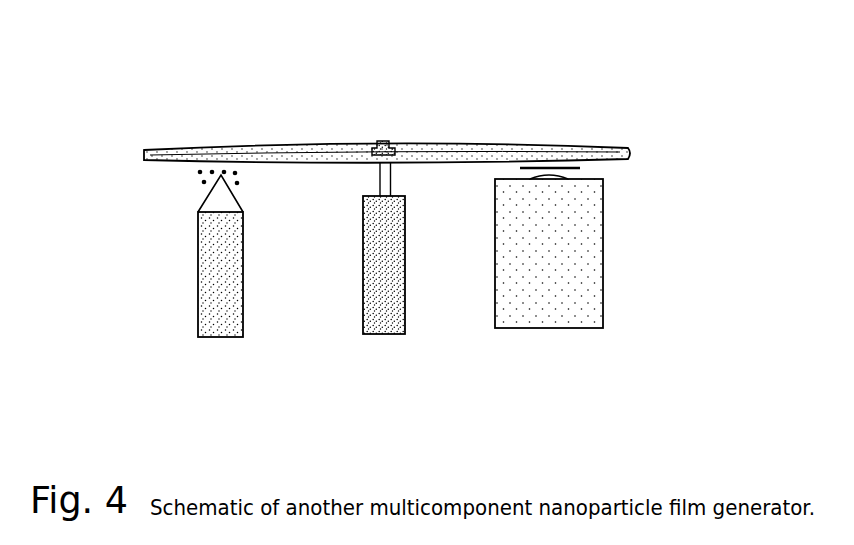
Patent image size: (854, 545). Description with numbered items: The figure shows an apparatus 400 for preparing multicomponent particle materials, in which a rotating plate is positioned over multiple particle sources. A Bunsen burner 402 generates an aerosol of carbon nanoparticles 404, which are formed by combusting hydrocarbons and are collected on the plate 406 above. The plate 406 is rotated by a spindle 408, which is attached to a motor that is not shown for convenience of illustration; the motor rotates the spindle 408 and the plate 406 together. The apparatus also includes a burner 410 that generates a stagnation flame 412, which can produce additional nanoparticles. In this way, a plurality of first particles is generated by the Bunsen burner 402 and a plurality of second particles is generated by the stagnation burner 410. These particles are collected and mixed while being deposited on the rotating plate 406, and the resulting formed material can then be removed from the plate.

The apparatus 400 is at (173, 48).
The Bunsen burner 402 is at (202, 194).
The carbon nanoparticles 404 is at (240, 181).
The plate 406 is at (433, 145).
The spindle 408 is at (400, 257).
The burner 410 is at (590, 268).
The stagnation flame 412 is at (565, 170).